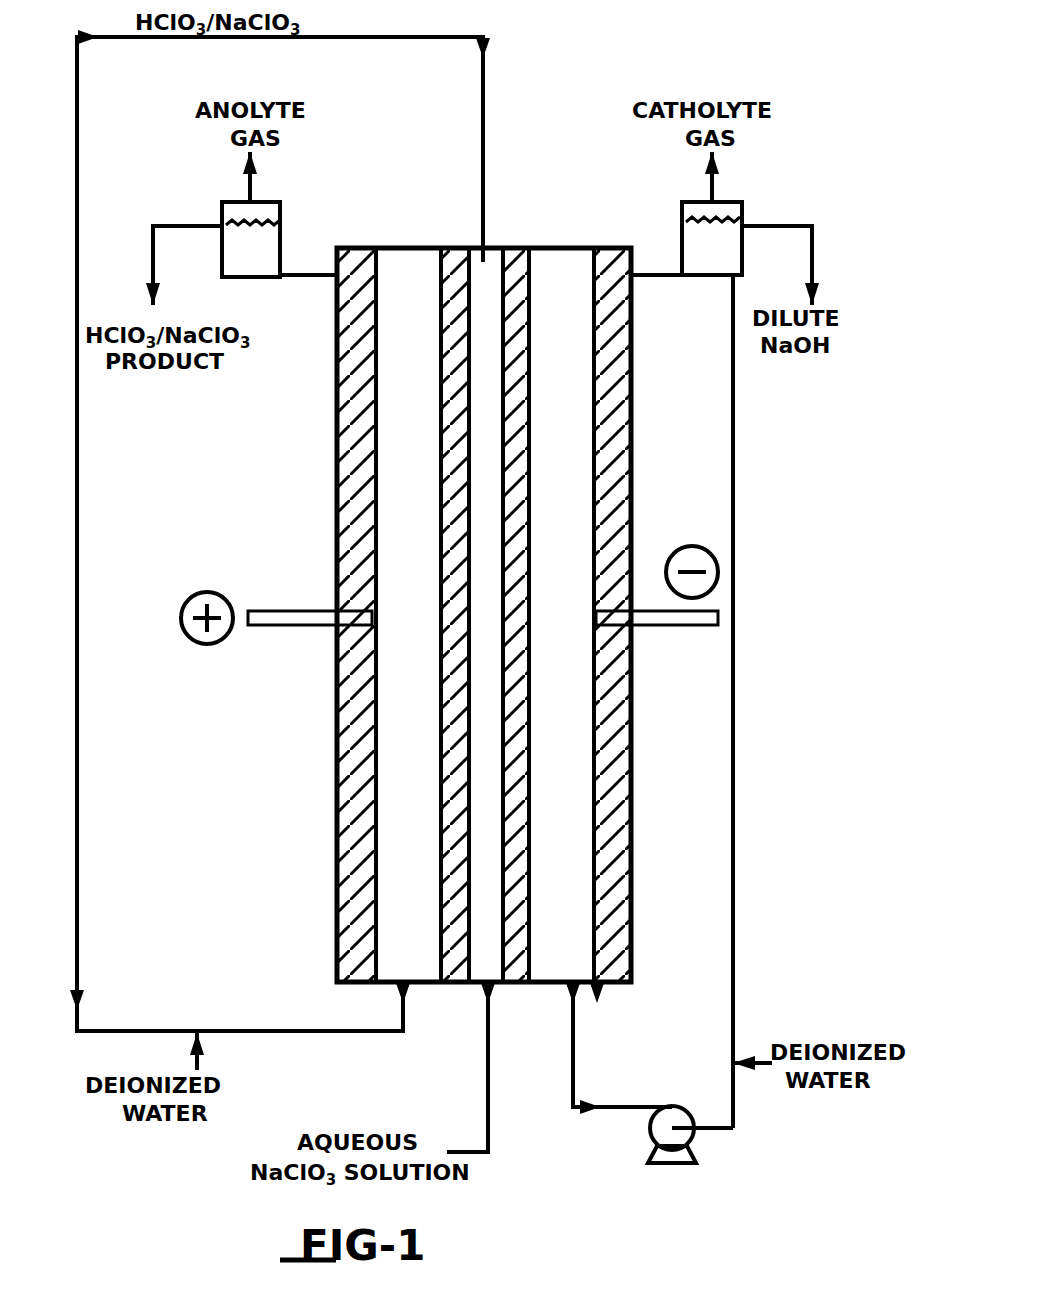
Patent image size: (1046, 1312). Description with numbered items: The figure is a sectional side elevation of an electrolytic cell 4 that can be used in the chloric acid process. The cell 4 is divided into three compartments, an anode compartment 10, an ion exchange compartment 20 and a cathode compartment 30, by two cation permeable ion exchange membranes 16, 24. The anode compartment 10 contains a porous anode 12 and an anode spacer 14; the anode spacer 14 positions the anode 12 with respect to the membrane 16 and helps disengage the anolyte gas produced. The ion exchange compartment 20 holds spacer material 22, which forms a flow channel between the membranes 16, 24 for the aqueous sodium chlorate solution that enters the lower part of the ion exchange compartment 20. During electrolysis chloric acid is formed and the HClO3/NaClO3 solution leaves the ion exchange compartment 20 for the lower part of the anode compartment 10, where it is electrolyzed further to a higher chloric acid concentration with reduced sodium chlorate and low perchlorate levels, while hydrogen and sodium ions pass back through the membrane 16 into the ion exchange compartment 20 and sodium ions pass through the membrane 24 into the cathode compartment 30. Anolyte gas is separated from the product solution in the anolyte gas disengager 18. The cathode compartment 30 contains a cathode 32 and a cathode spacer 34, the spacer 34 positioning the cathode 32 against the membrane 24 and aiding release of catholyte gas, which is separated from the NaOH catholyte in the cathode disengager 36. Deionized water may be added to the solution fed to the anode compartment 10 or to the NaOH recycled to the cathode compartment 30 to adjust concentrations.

The electrolytic cell 4 is at (337, 835).
The anode compartment 10 is at (372, 250).
The anode 12 is at (421, 963).
The anode spacer 14 is at (350, 462).
The cation permeable ion exchange membrane 16 is at (453, 250).
The anolyte gas disengager 18 is at (258, 258).
The ion exchange compartment 20 is at (487, 647).
The spacer material 22 is at (487, 262).
The cation permeable ion exchange membrane 24 is at (518, 975).
The cathode compartment 30 is at (597, 992).
The cathode 32 is at (560, 260).
The cathode spacer 34 is at (618, 730).
The cathode disengager 36 is at (708, 260).